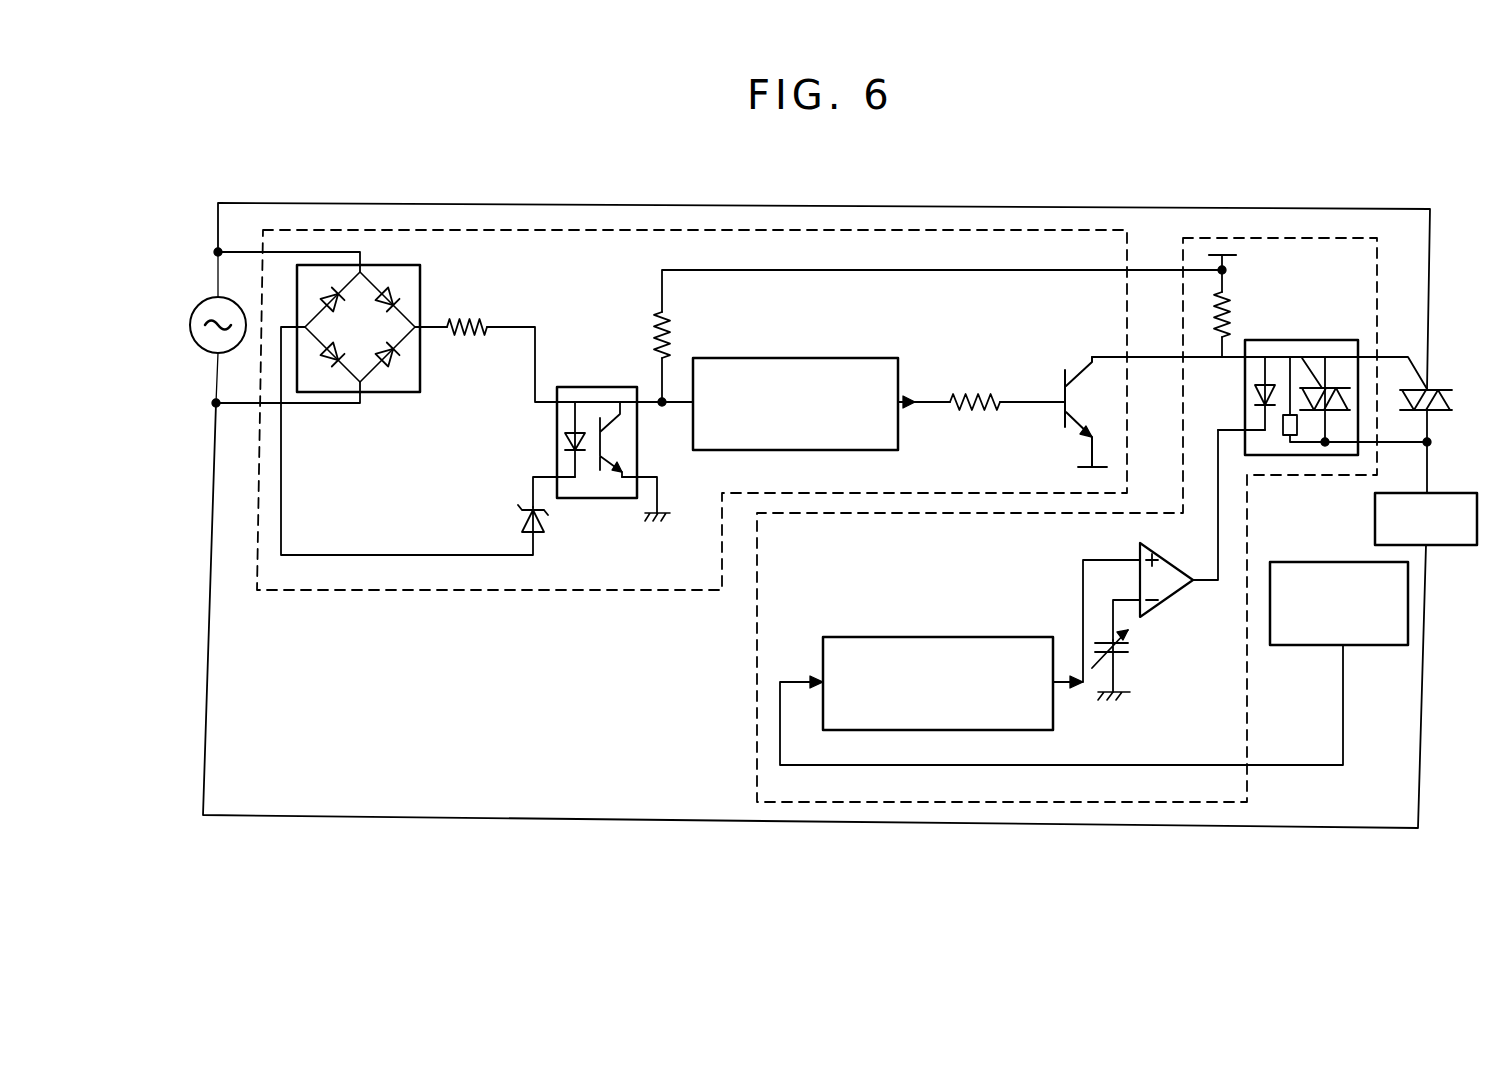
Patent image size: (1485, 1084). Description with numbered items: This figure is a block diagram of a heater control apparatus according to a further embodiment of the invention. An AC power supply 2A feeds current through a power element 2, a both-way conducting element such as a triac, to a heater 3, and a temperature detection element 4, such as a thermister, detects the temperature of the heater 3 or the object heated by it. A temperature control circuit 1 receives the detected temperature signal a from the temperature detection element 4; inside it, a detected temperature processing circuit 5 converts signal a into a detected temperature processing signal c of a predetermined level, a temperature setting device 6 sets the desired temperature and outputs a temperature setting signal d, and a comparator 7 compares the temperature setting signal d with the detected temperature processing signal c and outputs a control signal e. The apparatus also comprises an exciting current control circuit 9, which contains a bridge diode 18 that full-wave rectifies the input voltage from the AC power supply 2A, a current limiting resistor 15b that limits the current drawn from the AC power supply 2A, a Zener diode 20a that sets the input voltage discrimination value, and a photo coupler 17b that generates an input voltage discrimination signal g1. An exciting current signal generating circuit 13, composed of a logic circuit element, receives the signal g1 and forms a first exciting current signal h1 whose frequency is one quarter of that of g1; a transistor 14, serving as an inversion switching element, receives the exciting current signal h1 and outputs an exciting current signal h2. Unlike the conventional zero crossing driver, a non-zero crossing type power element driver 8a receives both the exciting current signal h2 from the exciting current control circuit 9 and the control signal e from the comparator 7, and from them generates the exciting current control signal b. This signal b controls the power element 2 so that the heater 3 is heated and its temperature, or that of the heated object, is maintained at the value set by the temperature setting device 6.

The AC power supply 2A is at (202, 309).
The bridge diode 18 is at (388, 393).
The current limiting resistor 15b is at (469, 319).
The photo coupler 17b is at (596, 384).
The Zener diode 20a is at (520, 518).
The input voltage discrimination signal g1 is at (681, 394).
The exciting current signal generating circuit 13 is at (839, 356).
The exciting current signal h1 is at (928, 400).
The transistor 14 is at (1081, 376).
The exciting current signal h2 is at (1143, 356).
The non-zero crossing type power element driver 8a is at (1282, 338).
The exciting current control signal b is at (1390, 356).
The power element 2 is at (1436, 387).
The heater 3 is at (1459, 492).
The exciting current control circuit 9 is at (603, 592).
The temperature control circuit 1 is at (756, 668).
The detected temperature processing circuit 5 is at (968, 637).
The detected temperature signal a is at (1343, 713).
The detected temperature processing signal c is at (1083, 603).
The temperature setting signal d is at (1131, 600).
The temperature setting device 6 is at (1127, 655).
The comparator 7 is at (1180, 605).
The control signal e is at (1216, 543).
The temperature detection element 4 is at (1315, 645).